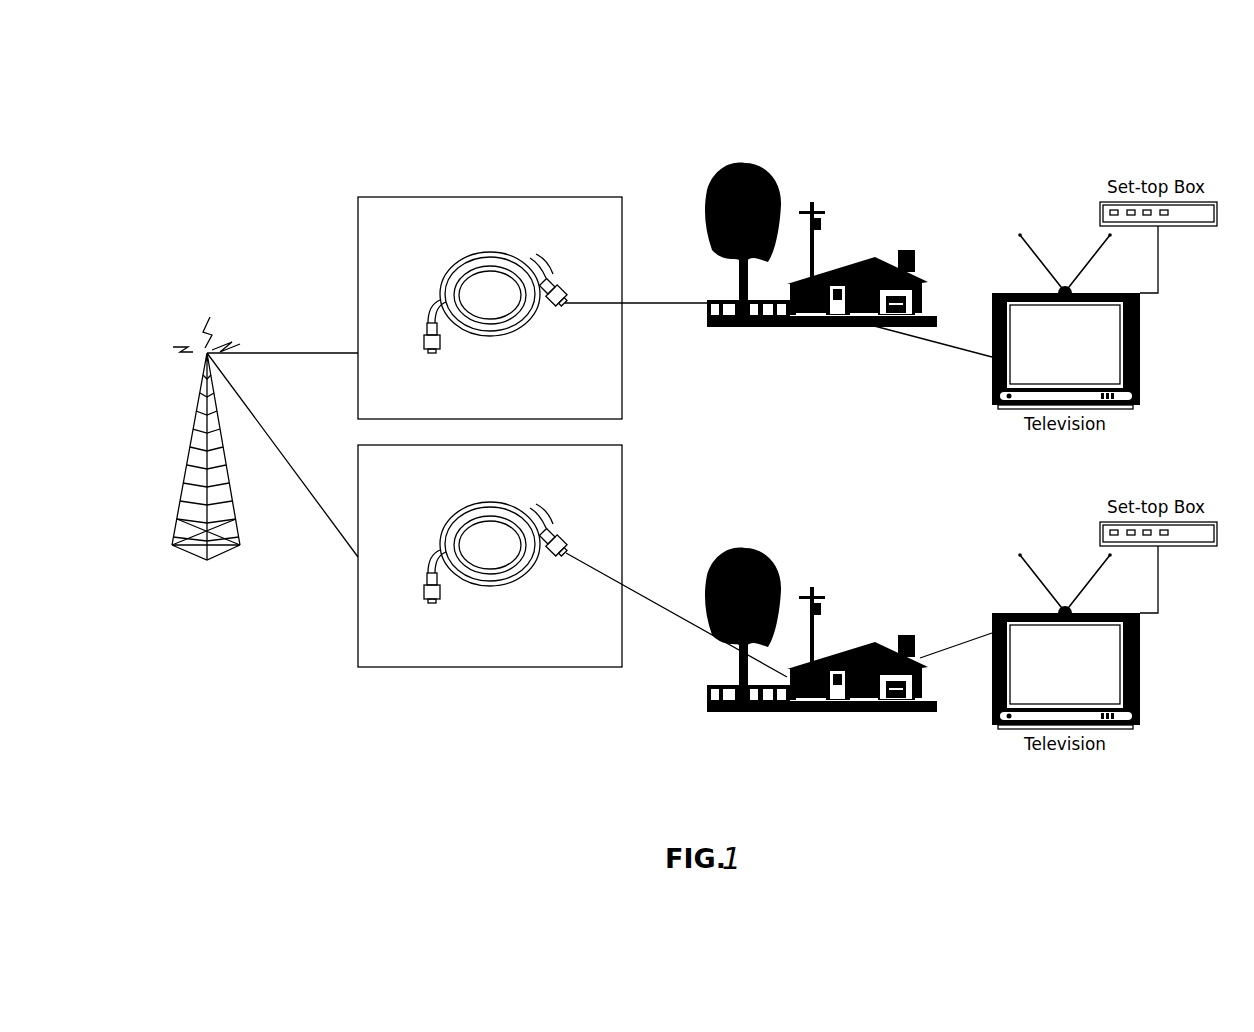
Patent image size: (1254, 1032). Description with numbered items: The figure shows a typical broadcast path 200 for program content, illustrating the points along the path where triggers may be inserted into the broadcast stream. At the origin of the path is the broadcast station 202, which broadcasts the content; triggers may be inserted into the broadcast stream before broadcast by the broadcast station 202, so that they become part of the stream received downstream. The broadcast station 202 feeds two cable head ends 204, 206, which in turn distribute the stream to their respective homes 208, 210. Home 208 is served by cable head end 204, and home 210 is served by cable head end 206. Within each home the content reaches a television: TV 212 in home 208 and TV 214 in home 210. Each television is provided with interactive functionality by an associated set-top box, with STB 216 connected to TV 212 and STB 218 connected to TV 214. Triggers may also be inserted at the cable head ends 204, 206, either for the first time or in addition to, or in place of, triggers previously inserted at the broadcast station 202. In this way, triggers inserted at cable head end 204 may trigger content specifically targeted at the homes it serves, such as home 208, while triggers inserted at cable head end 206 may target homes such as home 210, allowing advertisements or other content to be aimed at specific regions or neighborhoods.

The broadcast path 200 is at (1120, 102).
The broadcast station 202 is at (197, 418).
The cable head end 204 is at (450, 197).
The cable head end 206 is at (483, 667).
The home 208 is at (868, 258).
The home 210 is at (876, 644).
The TV 212 is at (993, 294).
The TV 214 is at (993, 614).
The STB 216 is at (1100, 203).
The STB 218 is at (1100, 523).